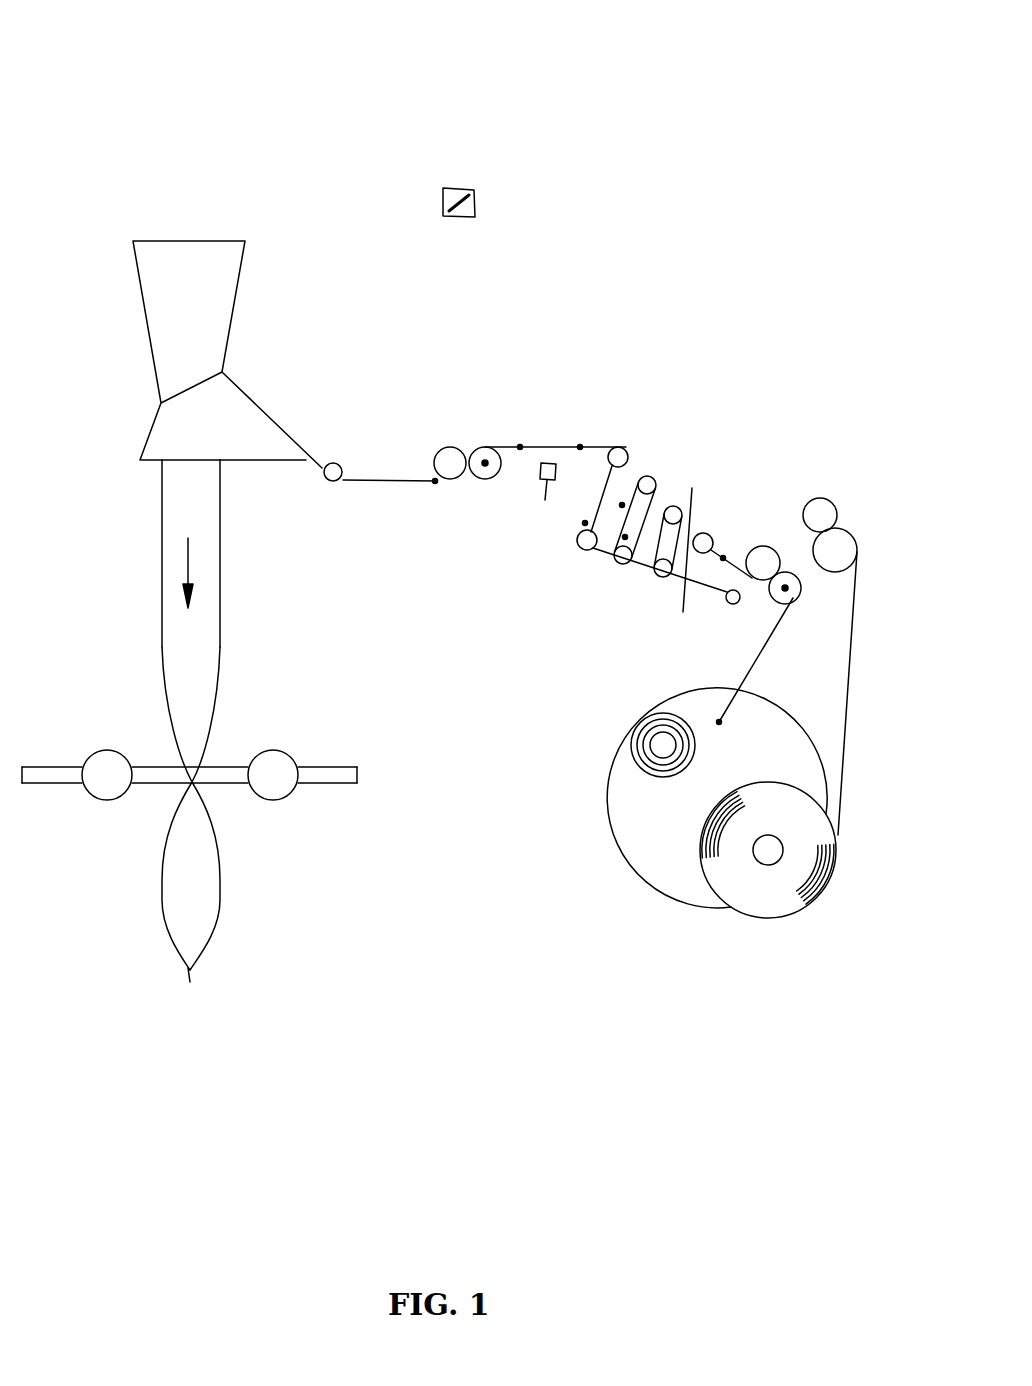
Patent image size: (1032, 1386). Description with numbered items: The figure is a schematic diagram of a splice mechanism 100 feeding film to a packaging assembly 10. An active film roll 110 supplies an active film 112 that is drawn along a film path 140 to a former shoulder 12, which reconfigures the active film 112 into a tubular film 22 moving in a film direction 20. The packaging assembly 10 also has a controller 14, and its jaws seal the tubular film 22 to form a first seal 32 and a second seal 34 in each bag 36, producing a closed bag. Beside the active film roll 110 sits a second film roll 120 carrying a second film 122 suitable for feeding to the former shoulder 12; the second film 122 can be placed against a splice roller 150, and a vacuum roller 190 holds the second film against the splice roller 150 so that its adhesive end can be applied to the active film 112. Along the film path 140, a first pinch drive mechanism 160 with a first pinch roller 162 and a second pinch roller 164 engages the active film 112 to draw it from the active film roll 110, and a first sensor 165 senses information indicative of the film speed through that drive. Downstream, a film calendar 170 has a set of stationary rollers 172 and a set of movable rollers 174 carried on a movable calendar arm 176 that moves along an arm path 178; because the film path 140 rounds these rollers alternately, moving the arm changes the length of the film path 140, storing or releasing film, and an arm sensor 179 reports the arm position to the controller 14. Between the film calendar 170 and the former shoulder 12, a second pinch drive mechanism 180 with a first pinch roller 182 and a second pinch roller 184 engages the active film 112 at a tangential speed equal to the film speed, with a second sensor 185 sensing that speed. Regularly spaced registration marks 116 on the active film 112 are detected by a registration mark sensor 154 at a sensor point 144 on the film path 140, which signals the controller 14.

The packaging assembly 10 is at (220, 66).
The former shoulder 12 is at (238, 268).
The controller 14 is at (476, 203).
The film direction 20 is at (188, 560).
The tubular film 22 is at (220, 640).
The first seal 32 is at (190, 975).
The second seal 34 is at (195, 788).
The bag 36 is at (160, 885).
The splice mechanism 100 is at (870, 297).
The active film roll 110 is at (719, 722).
The active film 112 is at (740, 686).
The registration marks 116 is at (521, 446).
The second film roll 120 is at (820, 893).
The second film 122 is at (848, 735).
The film path 140 is at (581, 446).
The sensor point 144 is at (554, 446).
The splice roller 150 is at (823, 513).
The registration mark sensor 154 is at (549, 500).
The first pinch drive mechanism 160 is at (767, 505).
The first pinch roller 162 is at (795, 600).
The second pinch roller 164 is at (760, 558).
The first sensor 165 is at (789, 588).
The film calendar 170 is at (586, 668).
The set of stationary rollers 172 is at (654, 472).
The set of movable rollers 174 is at (588, 570).
The movable calendar arm 176 is at (709, 578).
The arm path 178 is at (717, 532).
The arm sensor 179 is at (733, 604).
The second pinch drive mechanism 180 is at (473, 573).
The first pinch roller 182 is at (476, 448).
The second pinch roller 184 is at (442, 458).
The second sensor 185 is at (487, 460).
The vacuum roller 190 is at (850, 547).